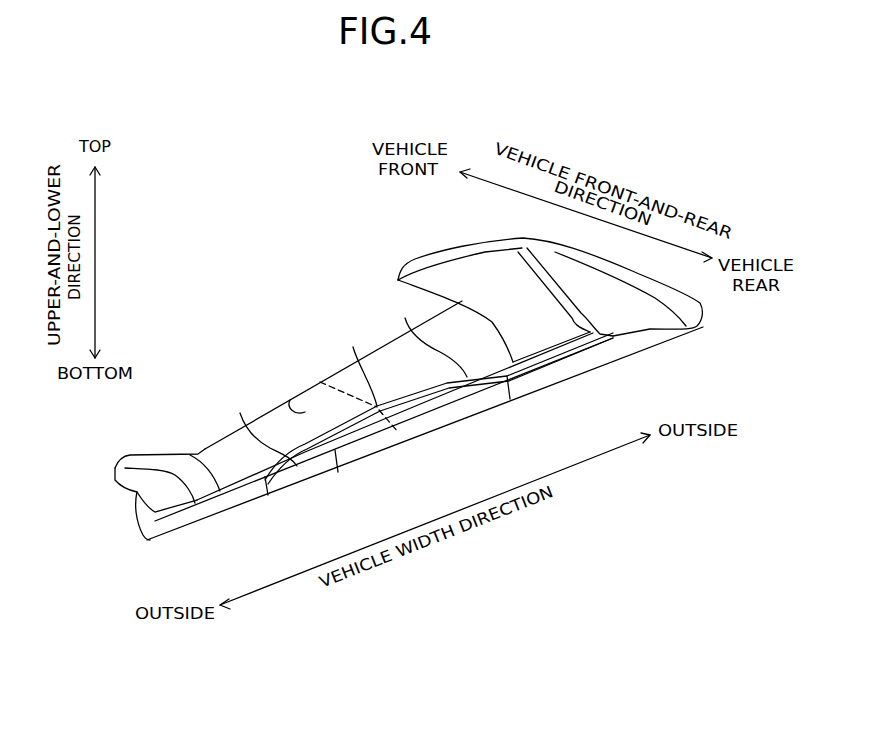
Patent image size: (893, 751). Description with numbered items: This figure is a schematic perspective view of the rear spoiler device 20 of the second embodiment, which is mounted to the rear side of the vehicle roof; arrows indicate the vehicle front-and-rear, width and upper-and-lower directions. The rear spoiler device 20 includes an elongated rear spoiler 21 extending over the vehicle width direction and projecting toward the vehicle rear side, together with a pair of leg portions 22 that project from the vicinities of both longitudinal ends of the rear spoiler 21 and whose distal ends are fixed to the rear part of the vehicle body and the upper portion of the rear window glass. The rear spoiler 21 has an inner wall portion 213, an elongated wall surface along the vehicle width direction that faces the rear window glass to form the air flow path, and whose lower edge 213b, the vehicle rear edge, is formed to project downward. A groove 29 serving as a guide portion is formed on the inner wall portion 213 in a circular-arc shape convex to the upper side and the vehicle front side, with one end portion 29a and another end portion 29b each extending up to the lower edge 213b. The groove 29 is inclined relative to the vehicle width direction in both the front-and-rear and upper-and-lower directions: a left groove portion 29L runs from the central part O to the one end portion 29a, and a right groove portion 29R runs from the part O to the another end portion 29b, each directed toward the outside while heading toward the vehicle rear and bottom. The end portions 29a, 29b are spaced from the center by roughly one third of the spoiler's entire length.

The rear spoiler device 20 is at (392, 467).
The rear spoiler 21 is at (281, 378).
The leg portion 22 is at (145, 464).
The groove 29 is at (410, 405).
The left groove portion 29L is at (262, 431).
The right groove portion 29R is at (428, 337).
The one end portion 29a is at (268, 495).
The another end portion 29b is at (510, 399).
The inner wall portion 213 is at (290, 400).
The lower edge 213b is at (338, 472).